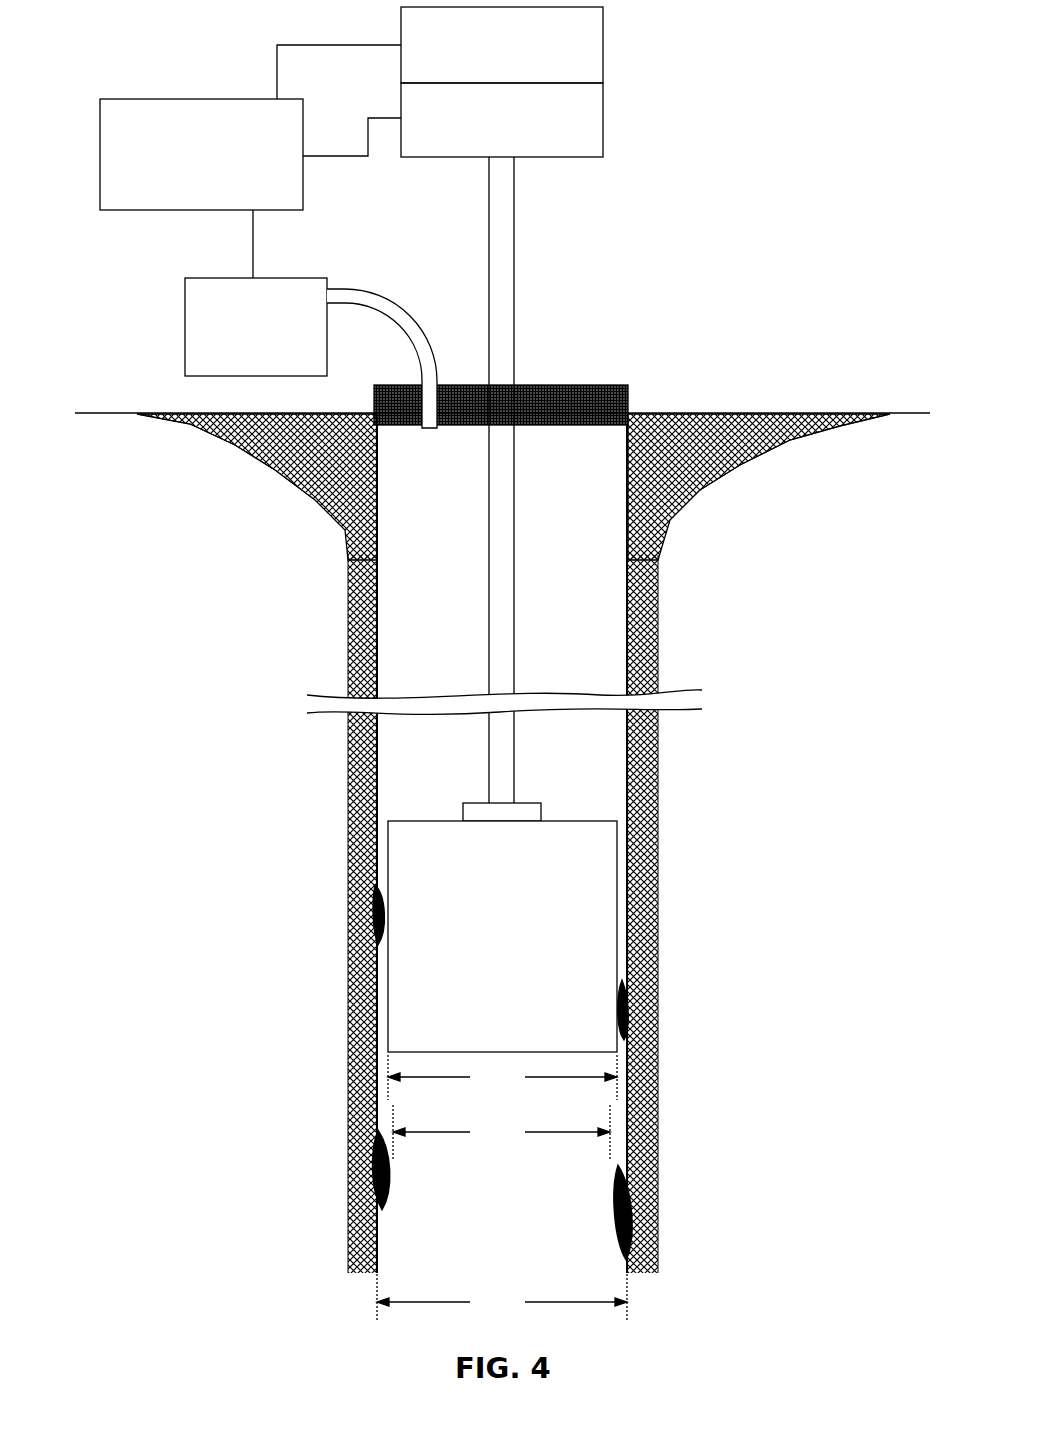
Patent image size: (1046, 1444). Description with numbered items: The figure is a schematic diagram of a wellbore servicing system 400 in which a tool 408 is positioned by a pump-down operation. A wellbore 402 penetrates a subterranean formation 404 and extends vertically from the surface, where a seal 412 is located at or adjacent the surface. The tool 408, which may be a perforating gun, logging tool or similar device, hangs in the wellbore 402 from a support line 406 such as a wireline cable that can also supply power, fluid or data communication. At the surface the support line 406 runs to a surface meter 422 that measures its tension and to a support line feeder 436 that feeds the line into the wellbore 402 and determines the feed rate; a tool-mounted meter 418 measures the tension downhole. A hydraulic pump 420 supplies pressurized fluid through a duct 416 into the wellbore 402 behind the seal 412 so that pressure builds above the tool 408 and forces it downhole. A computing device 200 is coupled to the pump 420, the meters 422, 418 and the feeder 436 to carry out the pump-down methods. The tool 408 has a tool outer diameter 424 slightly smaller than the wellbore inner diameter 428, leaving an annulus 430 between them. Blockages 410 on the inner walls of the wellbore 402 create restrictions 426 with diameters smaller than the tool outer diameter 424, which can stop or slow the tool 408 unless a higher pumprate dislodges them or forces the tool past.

The wellbore servicing system 400 is at (825, 63).
The computing device 200 is at (181, 196).
The support line feeder 436 is at (482, 76).
The surface meter 422 is at (482, 147).
The hydraulic pump 420 is at (236, 359).
The duct 416 is at (388, 296).
The seal 412 is at (583, 385).
The subterranean formation 404 is at (745, 465).
The wellbore 402 is at (570, 545).
The support line 406 is at (515, 622).
The annulus 430 is at (355, 778).
The tool-mounted meter 418 is at (472, 802).
The tool 408 is at (605, 820).
The blockages 410 is at (610, 1218).
The tool outer diameter 424 is at (502, 1077).
The restrictions 426 is at (501, 1132).
The wellbore inner diameter 428 is at (502, 1295).